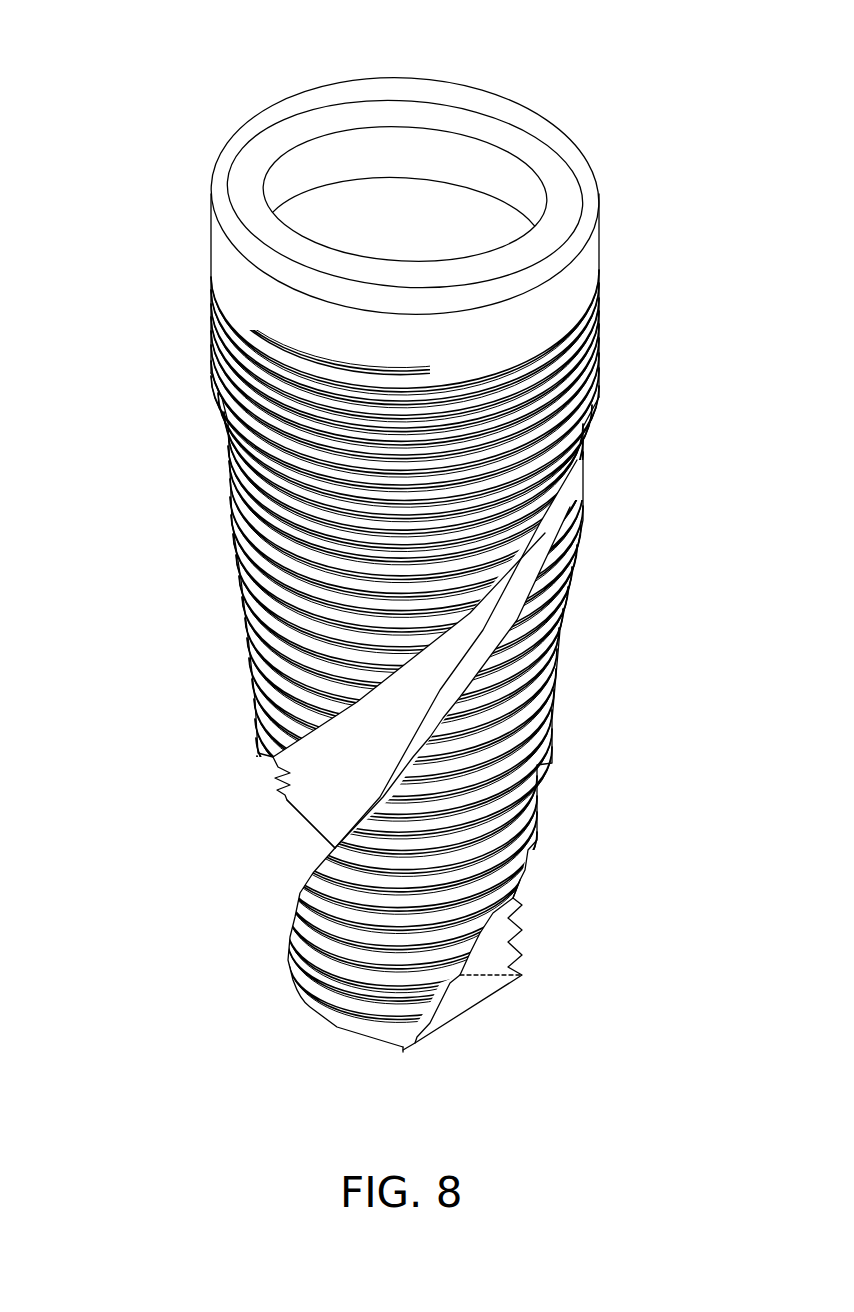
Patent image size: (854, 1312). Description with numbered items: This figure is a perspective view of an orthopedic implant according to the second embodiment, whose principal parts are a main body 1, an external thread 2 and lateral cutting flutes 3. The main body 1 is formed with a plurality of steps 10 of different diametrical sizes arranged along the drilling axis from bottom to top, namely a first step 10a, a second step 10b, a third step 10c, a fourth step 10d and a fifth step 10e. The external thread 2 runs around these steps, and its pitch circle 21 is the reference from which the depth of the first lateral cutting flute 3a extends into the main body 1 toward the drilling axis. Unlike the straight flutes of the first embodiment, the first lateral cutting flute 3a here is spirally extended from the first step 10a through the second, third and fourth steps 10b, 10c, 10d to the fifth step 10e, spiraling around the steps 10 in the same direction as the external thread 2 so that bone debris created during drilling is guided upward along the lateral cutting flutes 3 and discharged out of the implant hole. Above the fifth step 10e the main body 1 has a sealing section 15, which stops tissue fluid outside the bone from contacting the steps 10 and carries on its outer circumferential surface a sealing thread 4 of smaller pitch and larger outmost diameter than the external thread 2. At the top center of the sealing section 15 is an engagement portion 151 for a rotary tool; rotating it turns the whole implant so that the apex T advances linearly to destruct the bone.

The main body 1 is at (384, 558).
The engagement portion 151 is at (380, 147).
The sealing section 15 is at (212, 250).
The sealing thread 4 is at (232, 373).
The pitch circle 21 is at (248, 518).
The external thread 2 is at (401, 675).
The first lateral cutting flute 3a is at (312, 792).
The lateral cutting flutes 3 is at (366, 654).
The steps 10 is at (470, 726).
The first step 10a is at (530, 887).
The second step 10b is at (555, 770).
The third step 10c is at (563, 653).
The fourth step 10d is at (578, 535).
The fifth step 10e is at (595, 410).
The apex T is at (403, 1050).